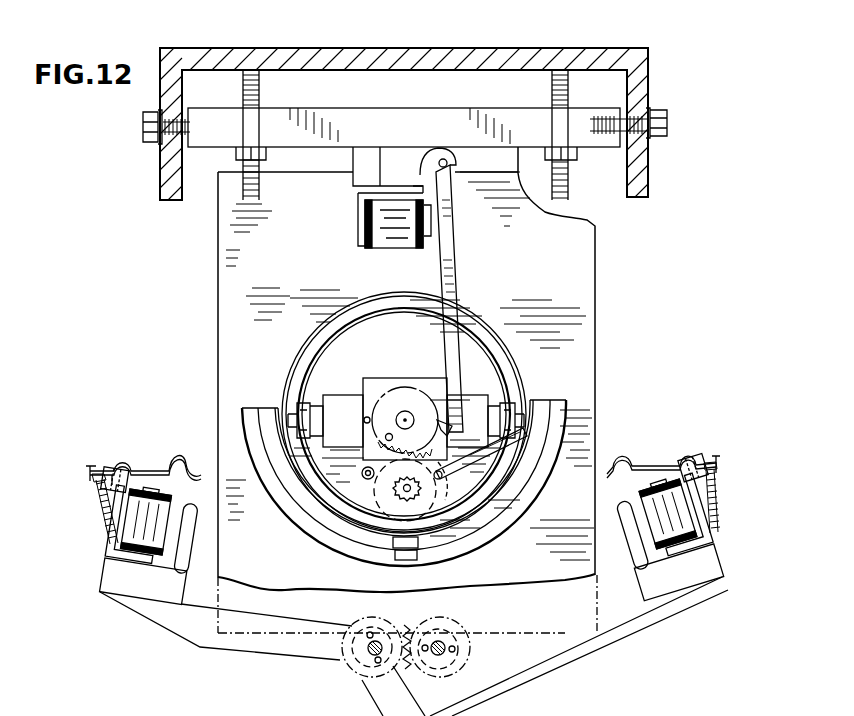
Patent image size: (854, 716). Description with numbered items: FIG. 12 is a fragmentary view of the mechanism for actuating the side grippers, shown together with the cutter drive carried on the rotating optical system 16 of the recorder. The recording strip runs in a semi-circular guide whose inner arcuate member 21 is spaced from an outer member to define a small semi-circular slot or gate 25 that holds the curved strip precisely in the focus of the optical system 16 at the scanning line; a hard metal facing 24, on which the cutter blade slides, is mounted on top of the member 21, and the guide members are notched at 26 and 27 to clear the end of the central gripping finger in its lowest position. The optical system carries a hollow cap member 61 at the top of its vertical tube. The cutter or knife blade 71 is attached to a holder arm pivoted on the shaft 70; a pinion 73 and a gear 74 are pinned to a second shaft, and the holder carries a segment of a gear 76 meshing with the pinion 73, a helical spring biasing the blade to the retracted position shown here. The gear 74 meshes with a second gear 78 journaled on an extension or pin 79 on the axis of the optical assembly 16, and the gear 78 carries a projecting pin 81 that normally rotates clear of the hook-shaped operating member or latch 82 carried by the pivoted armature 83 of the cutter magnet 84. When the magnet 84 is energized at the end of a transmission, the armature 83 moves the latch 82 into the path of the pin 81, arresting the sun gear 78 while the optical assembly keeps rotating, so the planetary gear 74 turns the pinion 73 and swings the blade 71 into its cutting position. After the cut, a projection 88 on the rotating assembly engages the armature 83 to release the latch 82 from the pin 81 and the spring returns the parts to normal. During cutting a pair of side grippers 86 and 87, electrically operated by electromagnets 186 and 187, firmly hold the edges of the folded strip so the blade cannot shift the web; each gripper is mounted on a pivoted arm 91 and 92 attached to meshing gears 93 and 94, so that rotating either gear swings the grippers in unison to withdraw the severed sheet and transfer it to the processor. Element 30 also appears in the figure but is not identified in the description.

The frame bracket 30 is at (469, 52).
The cutter magnet 84 is at (388, 242).
The pivoted armature 83 is at (455, 282).
The rotating optical system 16 is at (342, 386).
The semi-circular slot or gate 25 is at (340, 542).
The inner arcuate member 21 is at (504, 546).
The hard metal facing 24 is at (320, 508).
The hollow cap member 61 is at (396, 378).
The second gear 78 is at (415, 386).
The extension or pin 79 is at (406, 420).
The projection 88 is at (365, 419).
The projecting pin 81 is at (385, 437).
The hook-shaped operating member or latch 82 is at (452, 430).
The shaft 70 is at (362, 473).
The pinion 73 is at (375, 493).
The segment of a gear 76 is at (420, 494).
The gear 74 is at (441, 479).
The cutter or knife blade 71 is at (483, 456).
The notch 27 is at (396, 545).
The notch 26 is at (409, 556).
The pivoted arm 91 is at (172, 624).
The pivoted arm 92 is at (641, 606).
The gear 93 is at (354, 672).
The gear 94 is at (477, 656).
The side gripper 86 is at (163, 448).
The electromagnet 186 is at (132, 543).
The side gripper 87 is at (650, 452).
The electromagnet 187 is at (700, 532).